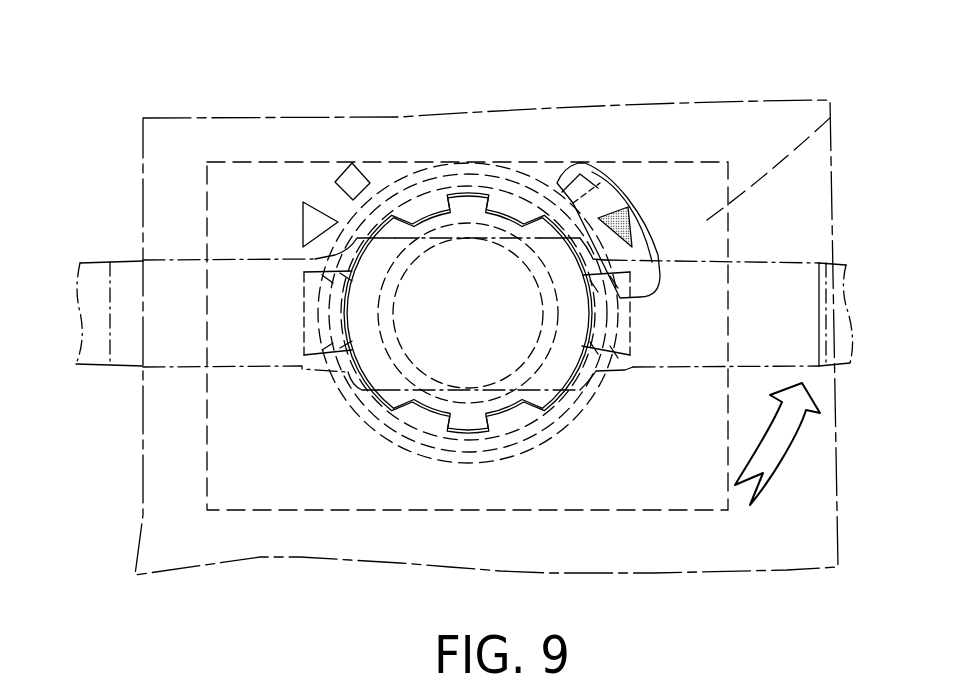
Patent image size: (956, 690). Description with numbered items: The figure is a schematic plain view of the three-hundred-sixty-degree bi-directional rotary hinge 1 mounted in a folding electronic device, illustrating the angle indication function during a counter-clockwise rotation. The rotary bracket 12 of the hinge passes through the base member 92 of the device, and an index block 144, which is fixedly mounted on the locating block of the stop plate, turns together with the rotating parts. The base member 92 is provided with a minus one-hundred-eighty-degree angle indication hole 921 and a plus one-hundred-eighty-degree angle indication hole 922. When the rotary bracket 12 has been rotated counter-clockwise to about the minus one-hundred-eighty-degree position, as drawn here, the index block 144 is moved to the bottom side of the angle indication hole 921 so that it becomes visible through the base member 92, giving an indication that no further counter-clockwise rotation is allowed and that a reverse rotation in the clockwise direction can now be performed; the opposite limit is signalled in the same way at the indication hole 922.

The 360° bi-directional rotary hinge 1 is at (387, 170).
The rotary bracket 12 is at (127, 256).
The base member 92 is at (831, 123).
The −180° angle indication hole 921 is at (623, 220).
The +180° angle indication hole 922 is at (303, 217).
The index block 144 is at (583, 163).